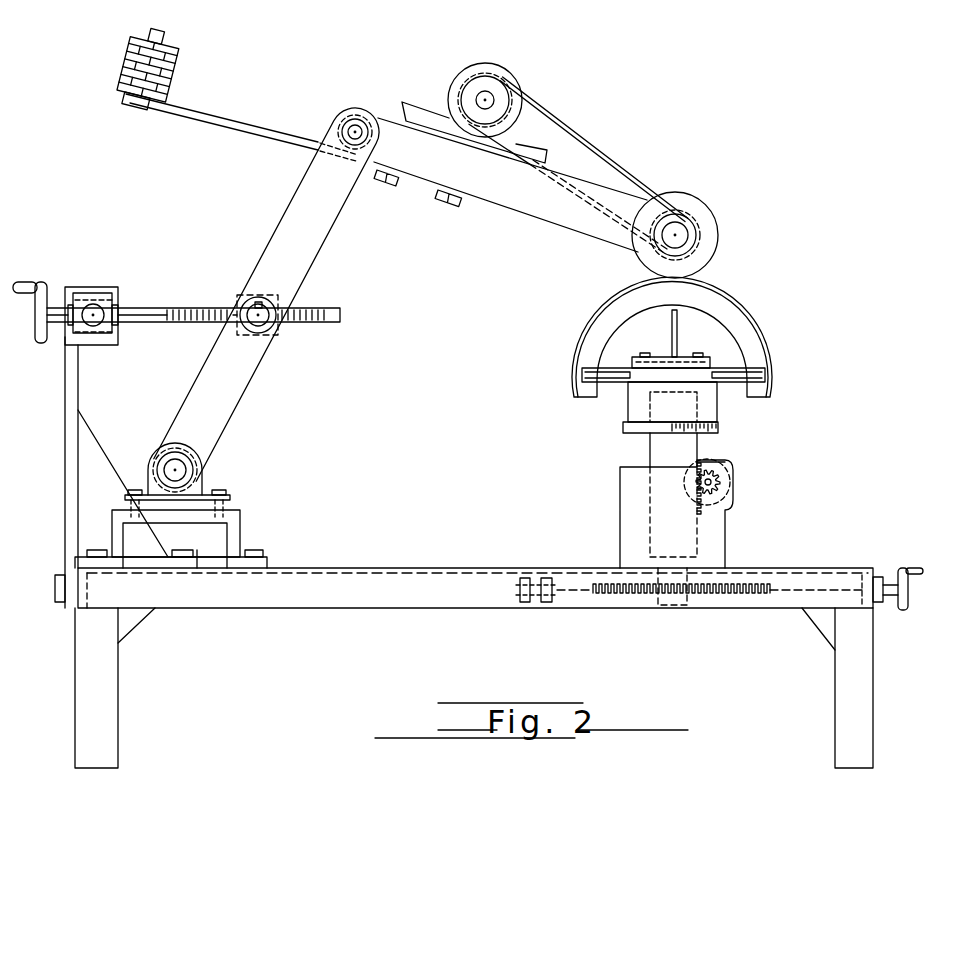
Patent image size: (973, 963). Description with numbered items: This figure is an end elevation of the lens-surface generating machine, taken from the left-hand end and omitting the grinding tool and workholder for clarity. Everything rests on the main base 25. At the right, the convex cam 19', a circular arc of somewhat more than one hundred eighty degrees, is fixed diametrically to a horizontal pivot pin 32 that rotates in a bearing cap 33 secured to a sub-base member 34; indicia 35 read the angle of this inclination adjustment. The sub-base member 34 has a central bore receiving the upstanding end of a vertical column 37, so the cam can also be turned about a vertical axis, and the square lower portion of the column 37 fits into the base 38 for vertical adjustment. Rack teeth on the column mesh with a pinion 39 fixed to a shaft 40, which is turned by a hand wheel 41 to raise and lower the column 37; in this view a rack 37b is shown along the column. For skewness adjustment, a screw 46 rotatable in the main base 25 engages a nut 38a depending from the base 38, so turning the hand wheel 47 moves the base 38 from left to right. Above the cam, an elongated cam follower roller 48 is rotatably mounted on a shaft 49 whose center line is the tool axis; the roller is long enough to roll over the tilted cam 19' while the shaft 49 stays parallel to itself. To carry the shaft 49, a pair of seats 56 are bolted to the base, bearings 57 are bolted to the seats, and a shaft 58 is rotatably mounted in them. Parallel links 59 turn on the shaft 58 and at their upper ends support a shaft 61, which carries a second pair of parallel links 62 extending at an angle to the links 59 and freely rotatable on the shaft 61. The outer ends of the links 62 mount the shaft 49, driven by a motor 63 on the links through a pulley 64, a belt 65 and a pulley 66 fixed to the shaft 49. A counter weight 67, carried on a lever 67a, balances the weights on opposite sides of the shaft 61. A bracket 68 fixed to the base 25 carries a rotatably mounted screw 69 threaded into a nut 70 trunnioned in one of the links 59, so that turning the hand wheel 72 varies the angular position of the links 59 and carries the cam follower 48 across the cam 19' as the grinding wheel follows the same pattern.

The convex cam 19' is at (677, 337).
The main base 25 is at (437, 568).
The horizontal pivot pin 32 is at (615, 383).
The bearing cap 33 is at (650, 357).
The sub-base member 34 is at (720, 407).
The indicia 35 is at (678, 320).
The vertical column 37 is at (646, 444).
The rack on cylinder 37b is at (702, 450).
The base 38 is at (717, 535).
The nut 38a is at (680, 608).
The pinion 39 is at (722, 478).
The shaft 40 is at (722, 483).
The hand wheel 41 is at (722, 458).
The screw 46 is at (772, 590).
The hand wheel 47 is at (908, 592).
The cam follower roller 48 is at (688, 201).
The shaft 49 is at (686, 232).
The seats 56 is at (236, 533).
The bearings 57 is at (197, 488).
The shaft 58 is at (172, 466).
The parallel links 59 is at (323, 249).
The shaft 61 is at (356, 130).
The parallel links 62 is at (524, 202).
The motor 63 is at (500, 66).
The pulley 64 is at (470, 76).
The belt 65 is at (605, 158).
The pulley 66 is at (701, 238).
The counter weight 67 is at (122, 63).
The counterweight lever 67a is at (258, 117).
The bracket 68 is at (65, 428).
The screw 69 is at (145, 308).
The nut 70 is at (240, 300).
The hand wheel 72 is at (33, 318).